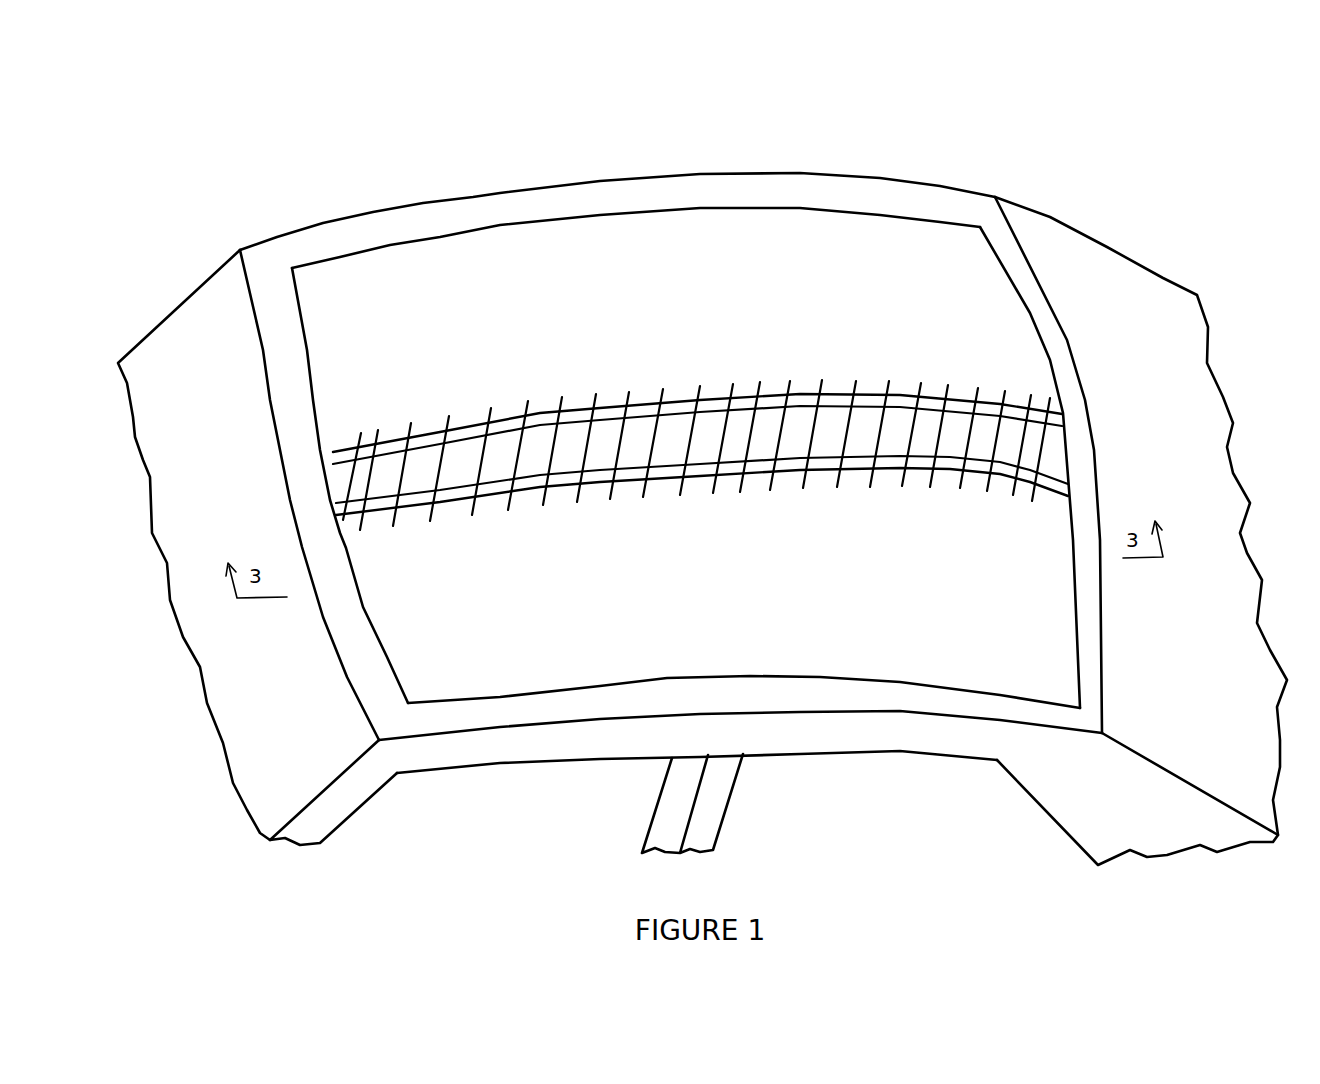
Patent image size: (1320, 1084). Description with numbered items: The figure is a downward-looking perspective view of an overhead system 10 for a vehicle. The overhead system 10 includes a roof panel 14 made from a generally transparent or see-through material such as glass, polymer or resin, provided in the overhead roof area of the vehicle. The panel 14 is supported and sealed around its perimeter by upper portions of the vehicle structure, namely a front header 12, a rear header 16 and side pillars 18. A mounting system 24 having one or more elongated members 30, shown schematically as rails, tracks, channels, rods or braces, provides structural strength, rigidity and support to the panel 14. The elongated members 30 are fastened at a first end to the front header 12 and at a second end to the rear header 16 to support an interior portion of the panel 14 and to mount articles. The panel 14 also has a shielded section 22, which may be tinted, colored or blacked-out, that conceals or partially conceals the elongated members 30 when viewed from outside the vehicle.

The overhead system 10 is at (1088, 100).
The front header 12 is at (309, 487).
The roof panel 14 is at (723, 235).
The rear header 16 is at (1065, 382).
The side pillars 18 is at (717, 705).
The shielded section 22 is at (477, 413).
The mounting system 24 is at (860, 343).
The elongated members 30 is at (677, 393).